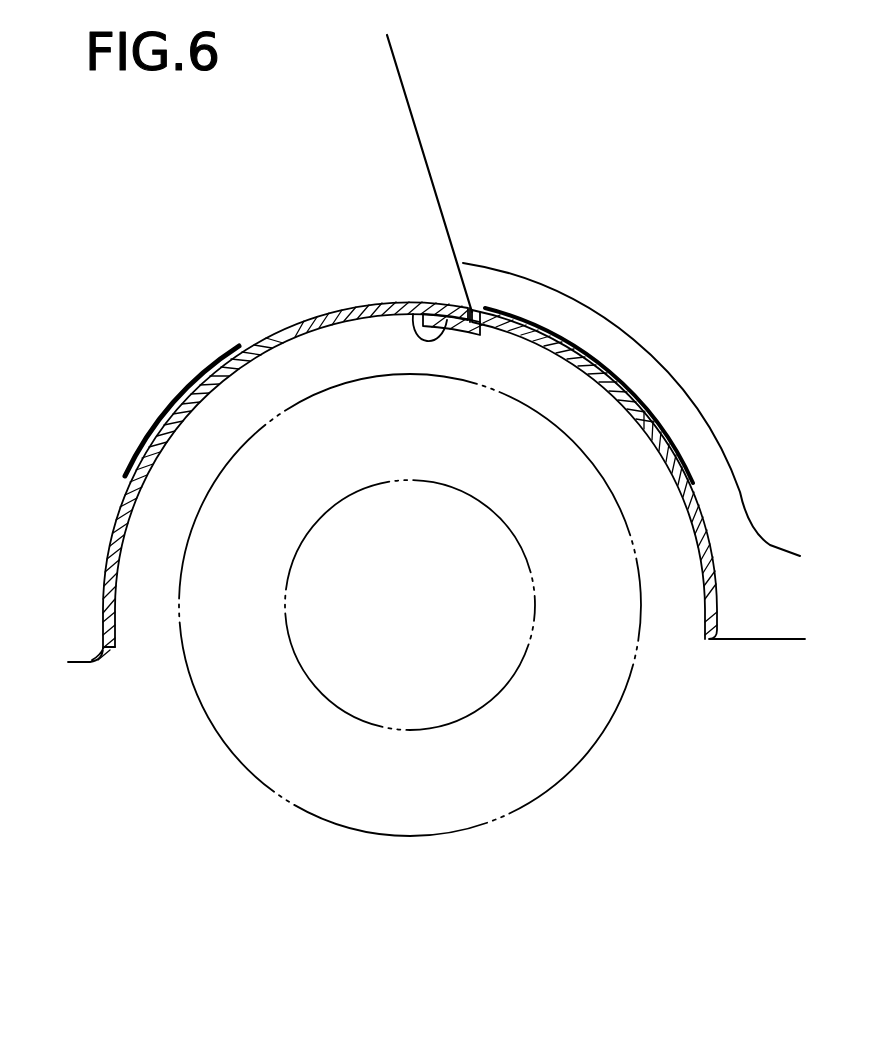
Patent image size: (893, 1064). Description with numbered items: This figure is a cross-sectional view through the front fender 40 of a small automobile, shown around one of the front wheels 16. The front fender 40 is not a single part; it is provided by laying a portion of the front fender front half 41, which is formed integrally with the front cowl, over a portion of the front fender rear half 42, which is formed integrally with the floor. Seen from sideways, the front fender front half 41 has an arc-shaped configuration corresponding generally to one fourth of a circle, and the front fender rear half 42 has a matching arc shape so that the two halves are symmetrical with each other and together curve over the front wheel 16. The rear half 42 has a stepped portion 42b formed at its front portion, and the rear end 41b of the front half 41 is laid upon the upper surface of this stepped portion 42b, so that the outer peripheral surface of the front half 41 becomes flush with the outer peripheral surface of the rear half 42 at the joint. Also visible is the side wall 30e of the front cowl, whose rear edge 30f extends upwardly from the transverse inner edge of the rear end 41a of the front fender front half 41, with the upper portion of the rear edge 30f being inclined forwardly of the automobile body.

The front wheel 16 is at (437, 838).
The side wall 30e is at (364, 58).
The rear edge 30f is at (437, 190).
The front fender 40 is at (313, 308).
The front fender front half 41 is at (228, 360).
The rear end 41a is at (488, 310).
The rear end 41b is at (410, 312).
The front fender rear half 42 is at (598, 366).
The stepped portion 42b is at (458, 290).